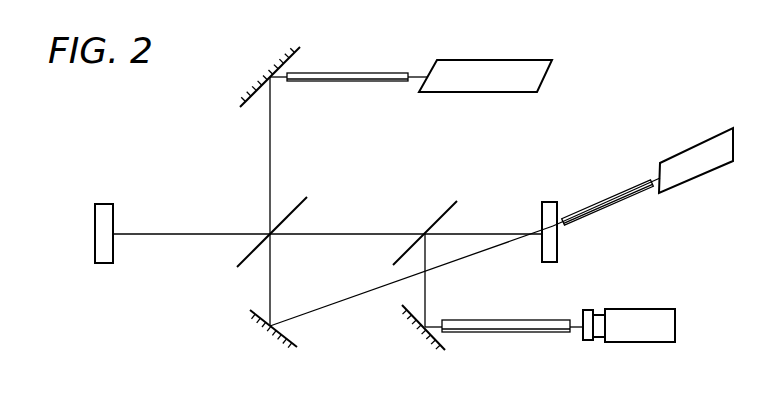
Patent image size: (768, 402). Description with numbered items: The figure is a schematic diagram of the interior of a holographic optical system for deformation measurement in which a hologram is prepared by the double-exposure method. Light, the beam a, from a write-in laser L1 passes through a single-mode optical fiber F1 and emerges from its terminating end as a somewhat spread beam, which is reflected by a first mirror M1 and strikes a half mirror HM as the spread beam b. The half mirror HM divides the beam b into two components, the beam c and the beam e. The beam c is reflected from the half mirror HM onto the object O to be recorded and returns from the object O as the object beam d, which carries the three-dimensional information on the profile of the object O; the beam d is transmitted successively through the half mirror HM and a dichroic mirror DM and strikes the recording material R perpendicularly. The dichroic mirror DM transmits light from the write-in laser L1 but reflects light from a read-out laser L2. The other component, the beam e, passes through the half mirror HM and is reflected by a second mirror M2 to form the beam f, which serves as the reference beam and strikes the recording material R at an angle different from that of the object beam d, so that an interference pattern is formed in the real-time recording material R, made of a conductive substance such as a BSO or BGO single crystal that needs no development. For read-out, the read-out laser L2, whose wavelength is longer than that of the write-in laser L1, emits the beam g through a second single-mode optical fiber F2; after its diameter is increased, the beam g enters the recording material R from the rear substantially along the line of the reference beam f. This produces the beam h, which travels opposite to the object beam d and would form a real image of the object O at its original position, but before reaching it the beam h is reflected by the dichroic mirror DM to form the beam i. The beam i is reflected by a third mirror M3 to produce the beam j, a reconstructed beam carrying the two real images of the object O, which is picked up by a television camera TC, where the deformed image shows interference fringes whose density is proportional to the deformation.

The first mirror M1 is at (268, 70).
The single-mode optical fiber F1 is at (347, 89).
The write-in laser L1 is at (487, 62).
The beam a is at (358, 63).
The spread beam b is at (260, 143).
The beam c is at (205, 223).
The object beam d is at (203, 243).
The beam e is at (264, 268).
The reference beam f is at (343, 308).
The beam g is at (612, 226).
The beam h is at (460, 240).
The beam i is at (421, 250).
The beam j is at (525, 311).
The object O is at (113, 253).
The half mirror HM is at (257, 246).
The dichroic mirror DM is at (438, 220).
The recording material R is at (557, 250).
The single-mode optical fiber F2 is at (608, 200).
The read-out laser L2 is at (692, 168).
The second mirror M2 is at (283, 342).
The third mirror M3 is at (424, 333).
The television camera TC is at (675, 322).